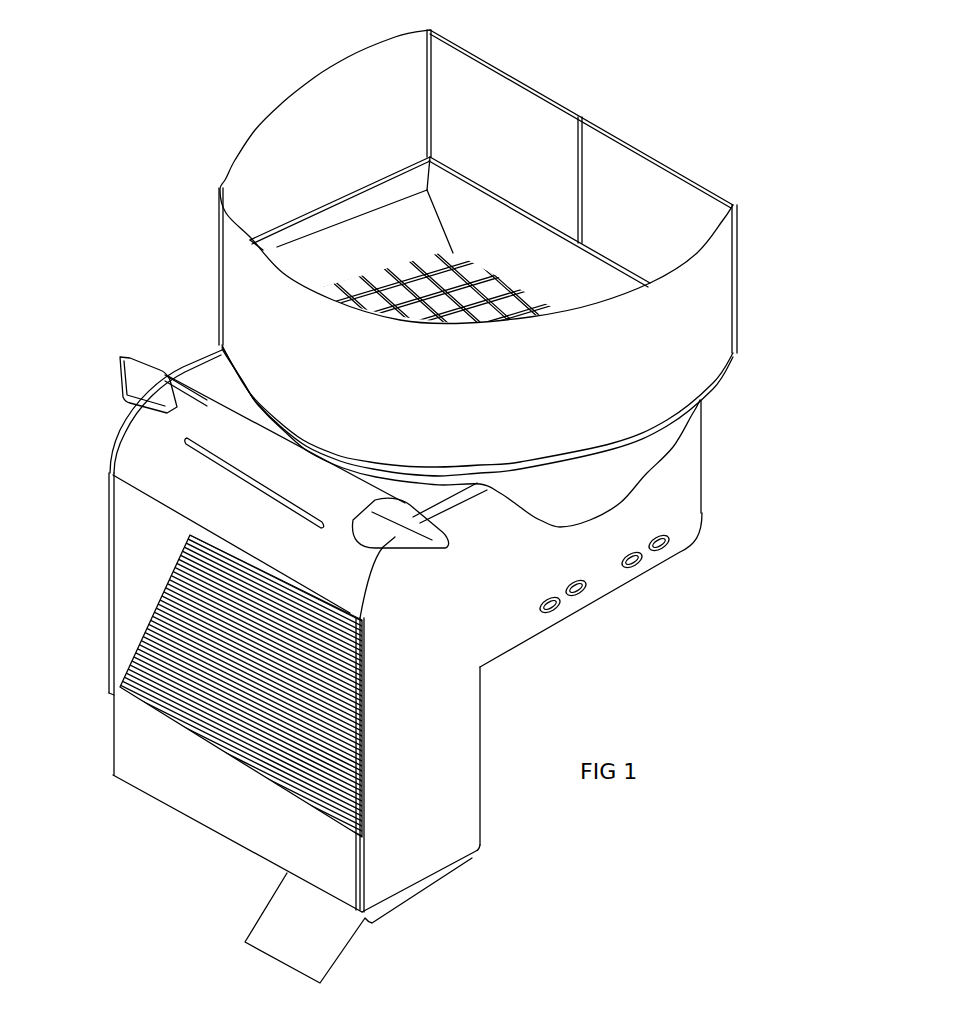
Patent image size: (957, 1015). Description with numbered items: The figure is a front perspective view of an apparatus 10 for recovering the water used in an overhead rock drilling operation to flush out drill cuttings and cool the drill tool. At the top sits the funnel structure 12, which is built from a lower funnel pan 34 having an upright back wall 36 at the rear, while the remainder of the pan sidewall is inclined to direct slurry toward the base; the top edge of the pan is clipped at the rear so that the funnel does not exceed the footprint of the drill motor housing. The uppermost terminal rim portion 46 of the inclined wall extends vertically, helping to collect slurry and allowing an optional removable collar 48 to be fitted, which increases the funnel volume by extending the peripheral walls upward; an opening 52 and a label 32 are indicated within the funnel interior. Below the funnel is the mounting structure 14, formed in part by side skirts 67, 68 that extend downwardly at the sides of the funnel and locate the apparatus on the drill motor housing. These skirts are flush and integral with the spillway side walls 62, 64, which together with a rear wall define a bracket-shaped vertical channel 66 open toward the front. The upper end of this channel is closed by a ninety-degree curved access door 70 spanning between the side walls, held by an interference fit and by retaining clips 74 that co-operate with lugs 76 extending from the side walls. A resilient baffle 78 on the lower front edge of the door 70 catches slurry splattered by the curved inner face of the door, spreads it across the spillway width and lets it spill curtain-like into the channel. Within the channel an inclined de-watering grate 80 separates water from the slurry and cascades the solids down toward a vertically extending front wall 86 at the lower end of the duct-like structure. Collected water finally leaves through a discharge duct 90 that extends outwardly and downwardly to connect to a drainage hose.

The apparatus 10 is at (660, 648).
The funnel structure 12 is at (700, 423).
The mounting structure 14 is at (527, 627).
The inlet 32 is at (407, 235).
The lower funnel pan 34 is at (310, 247).
The upright back wall 36 is at (538, 265).
The uppermost terminal rim portion 46 is at (377, 198).
The removable collar 48 is at (653, 192).
The opening 52 is at (450, 253).
The side wall 62 is at (457, 762).
The side wall 64 is at (117, 555).
The vertical channel 66 is at (147, 540).
The side skirt 67 is at (687, 500).
The side skirt 68 is at (77, 610).
The curved access door 70 is at (127, 440).
The retaining clips 74 is at (127, 353).
The lugs 76 is at (168, 372).
The baffle 78 is at (187, 530).
The filtering grate 80 is at (157, 693).
The front wall 86 is at (240, 823).
The discharge duct 90 is at (330, 957).